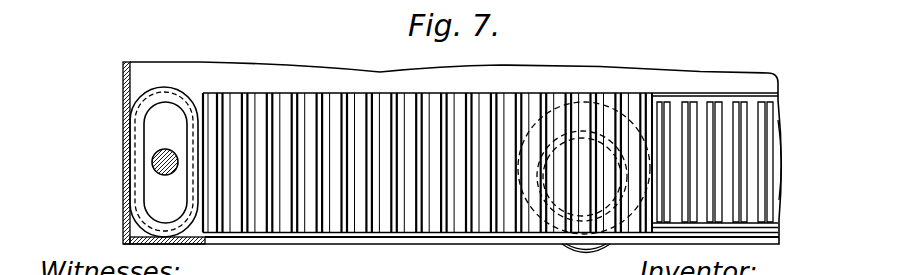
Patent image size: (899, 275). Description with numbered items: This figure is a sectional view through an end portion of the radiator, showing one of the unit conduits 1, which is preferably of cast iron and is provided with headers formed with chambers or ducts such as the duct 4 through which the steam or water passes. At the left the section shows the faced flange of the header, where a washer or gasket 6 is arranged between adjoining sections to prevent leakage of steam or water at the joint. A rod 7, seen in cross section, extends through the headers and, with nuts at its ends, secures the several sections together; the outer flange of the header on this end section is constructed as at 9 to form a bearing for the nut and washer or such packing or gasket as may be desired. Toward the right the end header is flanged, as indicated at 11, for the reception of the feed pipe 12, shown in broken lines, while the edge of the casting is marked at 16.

The conduit 1 is at (733, 93).
The chamber or duct 4 is at (158, 114).
The washer or gasket 6 is at (100, 152).
The rod 7 is at (157, 170).
The bearing formation of the outer flange 9 is at (138, 123).
The flange of the end header 11 is at (606, 100).
The feed pipe 12 is at (578, 108).
The side wall 16 is at (781, 163).